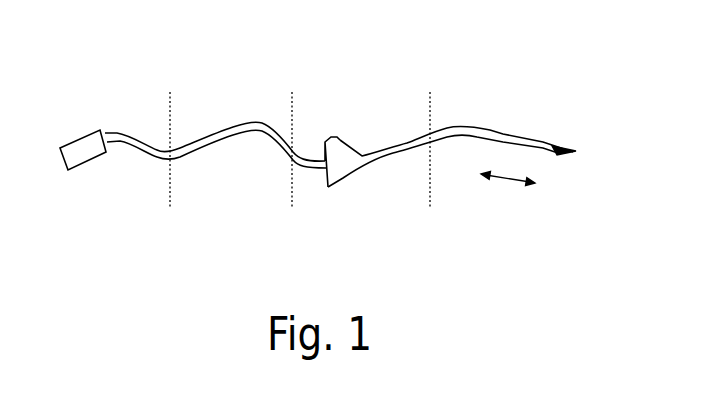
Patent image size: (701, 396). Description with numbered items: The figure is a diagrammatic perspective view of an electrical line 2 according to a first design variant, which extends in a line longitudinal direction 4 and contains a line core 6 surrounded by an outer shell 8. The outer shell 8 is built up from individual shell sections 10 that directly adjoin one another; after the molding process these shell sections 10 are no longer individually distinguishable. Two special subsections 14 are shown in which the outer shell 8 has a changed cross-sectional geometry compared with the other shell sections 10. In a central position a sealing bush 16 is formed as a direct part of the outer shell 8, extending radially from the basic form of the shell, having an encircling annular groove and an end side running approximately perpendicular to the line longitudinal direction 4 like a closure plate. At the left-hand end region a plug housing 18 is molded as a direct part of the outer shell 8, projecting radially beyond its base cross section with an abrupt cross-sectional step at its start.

The electrical line 2 is at (545, 100).
The line longitudinal direction 4 is at (503, 180).
The line core 6 is at (560, 157).
The outer shell 8 is at (276, 143).
The shell sections 10 is at (137, 137).
The subsections 14 is at (339, 114).
The sealing bush 16 is at (338, 190).
The plug housing 18 is at (84, 148).